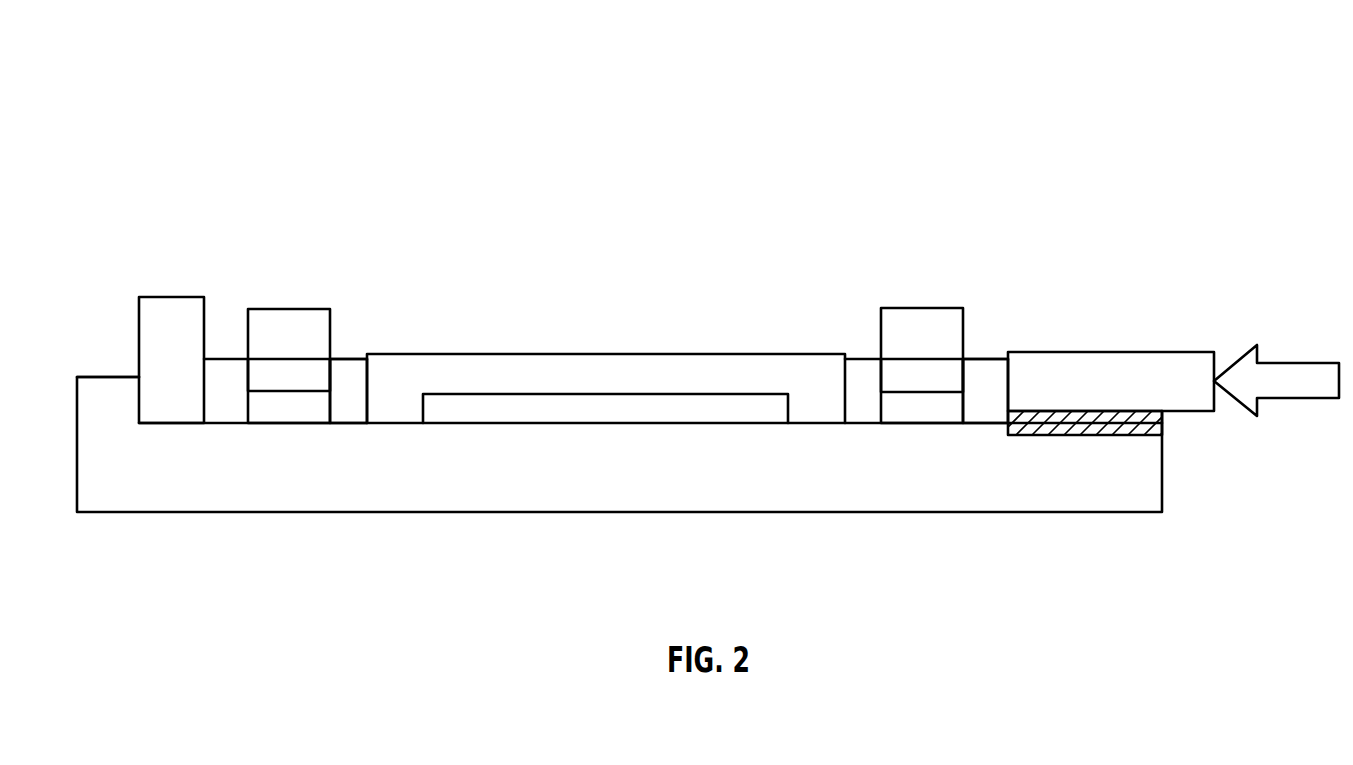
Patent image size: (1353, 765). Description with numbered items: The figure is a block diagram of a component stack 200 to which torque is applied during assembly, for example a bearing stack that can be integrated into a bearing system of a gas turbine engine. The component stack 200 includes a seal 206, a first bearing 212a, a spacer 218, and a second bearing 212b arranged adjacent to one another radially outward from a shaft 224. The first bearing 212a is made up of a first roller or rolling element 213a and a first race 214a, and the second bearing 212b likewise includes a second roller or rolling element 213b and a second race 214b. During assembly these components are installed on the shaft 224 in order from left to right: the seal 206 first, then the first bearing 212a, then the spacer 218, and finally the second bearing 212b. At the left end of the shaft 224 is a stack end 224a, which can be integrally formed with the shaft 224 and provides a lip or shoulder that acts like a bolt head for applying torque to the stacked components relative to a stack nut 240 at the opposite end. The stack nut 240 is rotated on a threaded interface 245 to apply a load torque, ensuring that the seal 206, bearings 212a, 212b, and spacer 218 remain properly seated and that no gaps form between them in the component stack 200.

The component stack 200 is at (1218, 100).
The seal 206 is at (177, 306).
The first bearing 212a is at (302, 284).
The second bearing 212b is at (929, 266).
The first roller/rolling element 213a is at (291, 373).
The second roller/rolling element 213b is at (922, 372).
The first race 214a is at (346, 407).
The second race 214b is at (977, 407).
The spacer 218 is at (648, 365).
The shaft 224 is at (603, 495).
The stack end 224a is at (112, 388).
The stack nut 240 is at (1123, 365).
The threaded interface 245 is at (1090, 428).